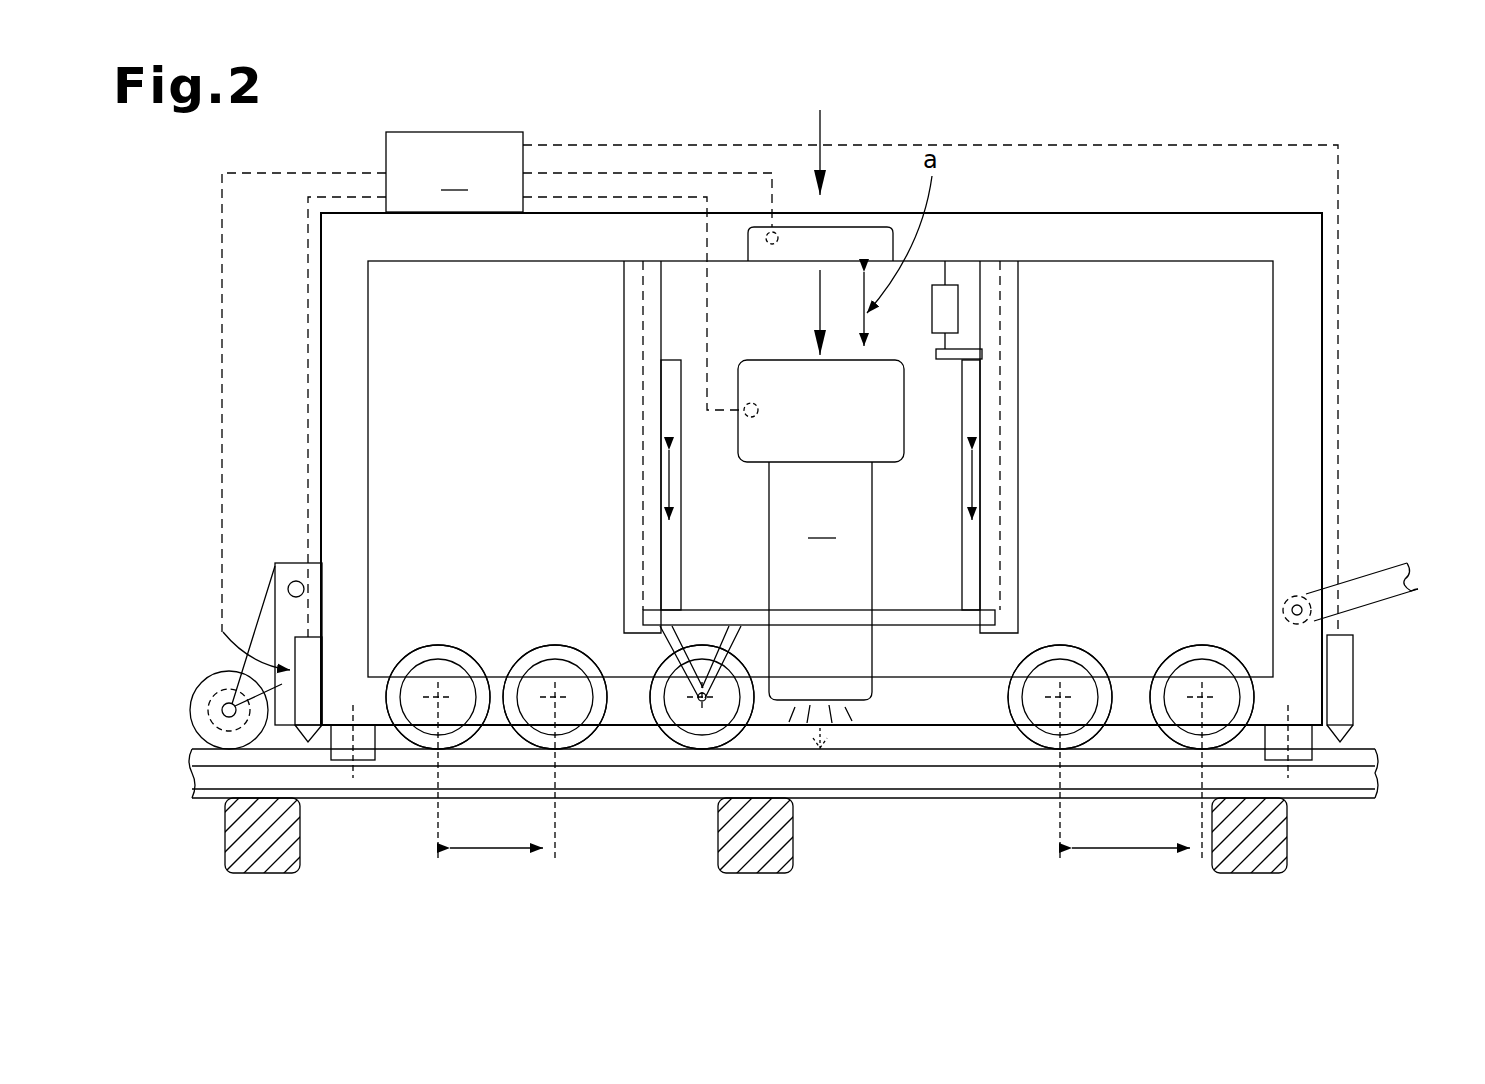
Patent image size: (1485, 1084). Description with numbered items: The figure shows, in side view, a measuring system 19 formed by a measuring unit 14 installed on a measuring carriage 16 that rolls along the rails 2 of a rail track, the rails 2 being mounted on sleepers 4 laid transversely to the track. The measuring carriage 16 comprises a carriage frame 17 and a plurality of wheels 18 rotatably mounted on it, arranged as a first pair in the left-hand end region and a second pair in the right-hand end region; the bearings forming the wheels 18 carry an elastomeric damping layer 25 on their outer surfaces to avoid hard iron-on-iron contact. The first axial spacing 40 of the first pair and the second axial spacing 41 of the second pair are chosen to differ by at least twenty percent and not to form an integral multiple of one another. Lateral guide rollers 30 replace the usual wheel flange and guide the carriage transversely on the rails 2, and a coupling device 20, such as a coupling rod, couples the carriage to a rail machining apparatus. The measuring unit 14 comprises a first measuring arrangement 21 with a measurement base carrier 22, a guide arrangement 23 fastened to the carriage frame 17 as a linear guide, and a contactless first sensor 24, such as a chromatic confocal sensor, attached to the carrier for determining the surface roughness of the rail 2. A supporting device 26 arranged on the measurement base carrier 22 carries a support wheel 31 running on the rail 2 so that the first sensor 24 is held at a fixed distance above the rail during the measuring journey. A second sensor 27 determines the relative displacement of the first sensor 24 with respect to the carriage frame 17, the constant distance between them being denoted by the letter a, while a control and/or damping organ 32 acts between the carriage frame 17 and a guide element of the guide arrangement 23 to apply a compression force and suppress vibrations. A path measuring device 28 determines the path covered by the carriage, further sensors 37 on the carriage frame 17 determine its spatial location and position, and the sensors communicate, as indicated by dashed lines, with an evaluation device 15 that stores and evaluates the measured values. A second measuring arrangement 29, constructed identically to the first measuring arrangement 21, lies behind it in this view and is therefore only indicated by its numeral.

The rail 2 is at (185, 800).
The sleeper 4 is at (272, 852).
The measuring unit 14 is at (1037, 202).
The evaluation device 15 is at (500, 401).
The measuring carriage 16 is at (1343, 233).
The carriage frame 17 is at (1328, 393).
The wheel 18 is at (526, 635).
The measuring system 19 is at (1340, 158).
The coupling device 20 is at (1388, 545).
The first measuring arrangement 21 is at (937, 240).
The second measuring arrangement 29 is at (950, 222).
The measurement base carrier 22 is at (927, 640).
The guide arrangement 23 is at (605, 420).
The first sensor 24 is at (821, 554).
The damping layer 25 is at (428, 650).
The supporting device 26 is at (650, 742).
The second sensor 27 is at (845, 240).
The path measuring device 28 is at (197, 660).
The lateral guide roller 30 is at (373, 745).
The support wheel 31 is at (718, 708).
The control and/or damping organ 32 is at (950, 297).
The further sensor 37 is at (312, 653).
The first axial spacing 40 is at (496, 848).
The second axial spacing 41 is at (1145, 848).